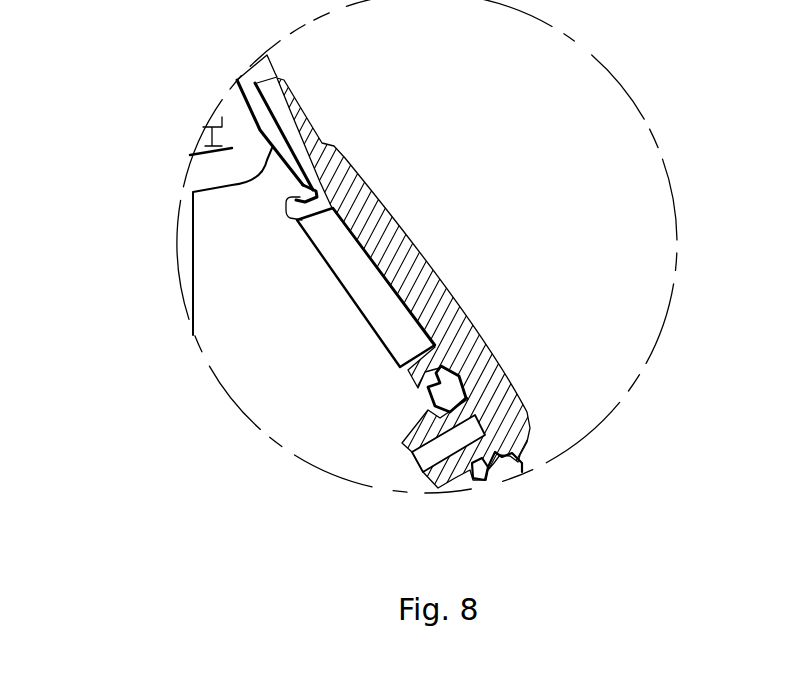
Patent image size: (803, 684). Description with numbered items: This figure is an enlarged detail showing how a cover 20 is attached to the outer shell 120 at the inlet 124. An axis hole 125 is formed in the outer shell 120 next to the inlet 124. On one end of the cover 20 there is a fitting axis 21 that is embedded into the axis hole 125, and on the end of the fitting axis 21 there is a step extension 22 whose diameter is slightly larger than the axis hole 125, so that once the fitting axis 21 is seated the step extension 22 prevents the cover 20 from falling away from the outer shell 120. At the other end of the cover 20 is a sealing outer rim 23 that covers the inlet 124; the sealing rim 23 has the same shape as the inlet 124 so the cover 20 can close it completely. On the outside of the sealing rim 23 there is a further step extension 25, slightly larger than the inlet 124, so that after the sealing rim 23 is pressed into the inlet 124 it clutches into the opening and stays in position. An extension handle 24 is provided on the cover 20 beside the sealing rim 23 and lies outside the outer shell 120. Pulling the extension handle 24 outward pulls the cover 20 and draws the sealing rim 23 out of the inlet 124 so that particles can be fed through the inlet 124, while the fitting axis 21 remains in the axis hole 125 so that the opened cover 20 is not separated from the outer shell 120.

The cover 20 is at (432, 288).
The fitting axis 21 is at (418, 442).
The step extension 22 is at (470, 470).
The sealing outer rim 23 is at (303, 217).
The extension handle 24 is at (282, 116).
The step extension 25 is at (422, 378).
The outer shell 120 is at (253, 58).
The inlet 124 is at (307, 190).
The axis hole 125 is at (498, 468).